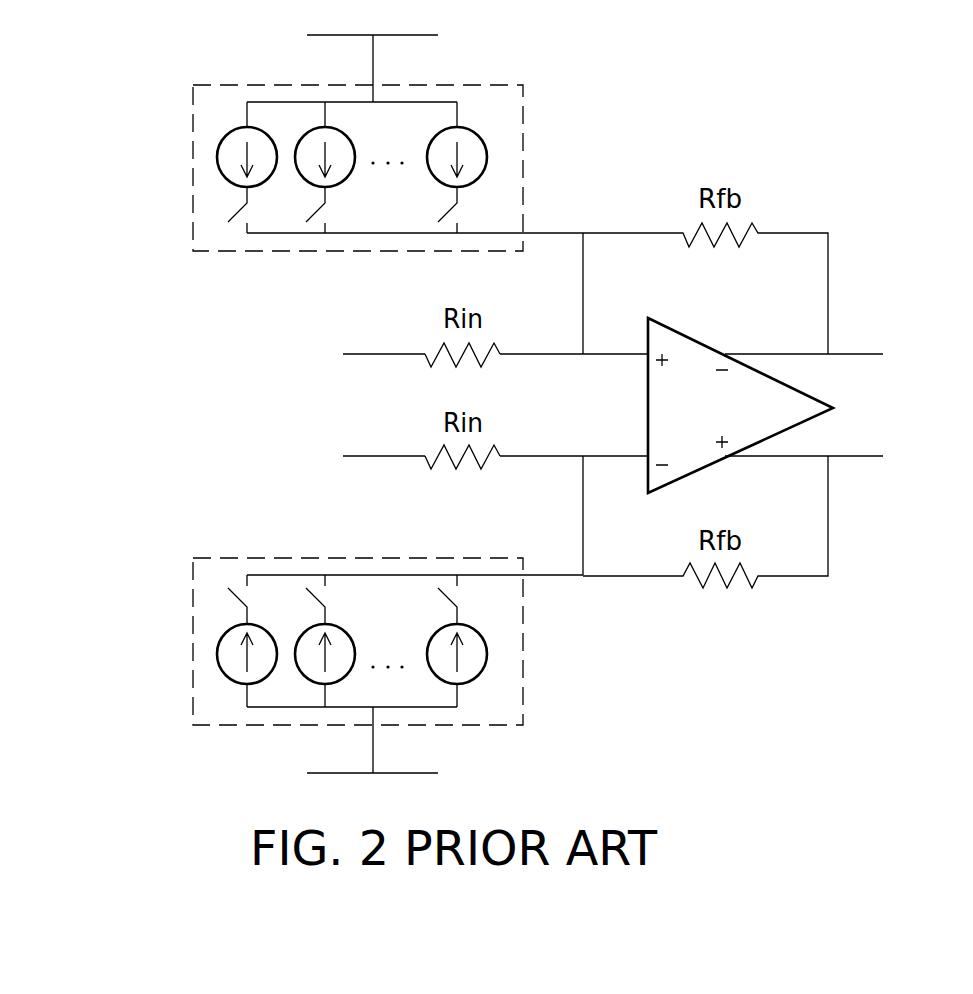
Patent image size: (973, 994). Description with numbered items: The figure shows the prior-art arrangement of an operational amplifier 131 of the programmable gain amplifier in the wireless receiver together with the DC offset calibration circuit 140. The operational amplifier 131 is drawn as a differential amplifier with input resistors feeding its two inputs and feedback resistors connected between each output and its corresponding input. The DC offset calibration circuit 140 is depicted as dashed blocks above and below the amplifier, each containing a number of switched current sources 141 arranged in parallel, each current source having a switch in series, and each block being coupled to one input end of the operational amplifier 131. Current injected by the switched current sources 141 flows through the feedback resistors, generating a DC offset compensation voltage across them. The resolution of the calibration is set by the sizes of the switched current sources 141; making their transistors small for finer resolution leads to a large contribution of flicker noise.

The DC offset calibration circuit 140 is at (193, 132).
The switched current sources 141 is at (487, 150).
The operational amplifier 131 is at (803, 391).